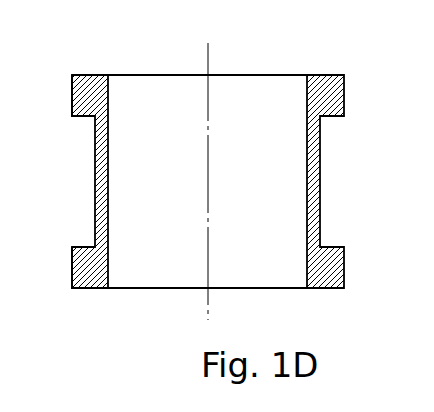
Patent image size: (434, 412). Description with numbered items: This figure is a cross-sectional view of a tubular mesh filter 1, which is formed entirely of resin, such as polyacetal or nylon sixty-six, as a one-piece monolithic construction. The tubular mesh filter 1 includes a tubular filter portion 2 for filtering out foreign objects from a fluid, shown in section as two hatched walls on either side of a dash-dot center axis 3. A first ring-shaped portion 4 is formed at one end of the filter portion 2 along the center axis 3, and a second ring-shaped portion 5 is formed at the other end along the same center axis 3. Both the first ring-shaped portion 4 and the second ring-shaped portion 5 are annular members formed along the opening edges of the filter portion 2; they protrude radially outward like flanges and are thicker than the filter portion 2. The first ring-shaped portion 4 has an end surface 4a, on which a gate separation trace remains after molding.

The tubular mesh filter 1 is at (323, 69).
The filter portion 2 is at (98, 193).
The center axis 3 is at (208, 303).
The first ring-shaped portion 4 is at (77, 81).
The end surface 4a is at (93, 75).
The second ring-shaped portion 5 is at (83, 278).